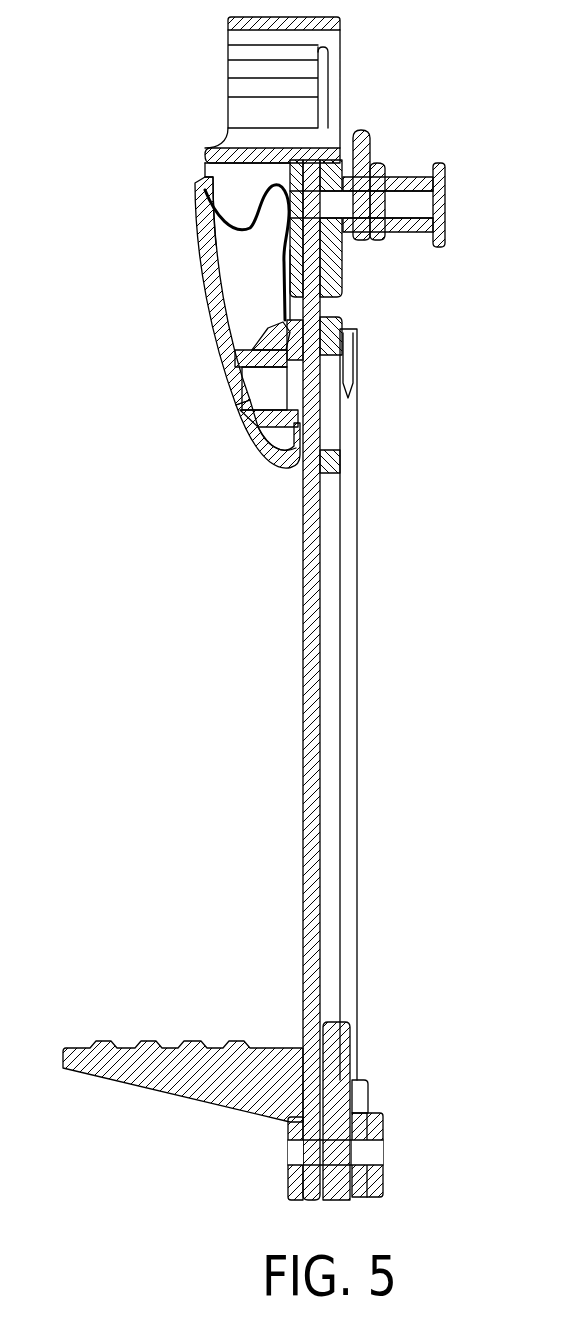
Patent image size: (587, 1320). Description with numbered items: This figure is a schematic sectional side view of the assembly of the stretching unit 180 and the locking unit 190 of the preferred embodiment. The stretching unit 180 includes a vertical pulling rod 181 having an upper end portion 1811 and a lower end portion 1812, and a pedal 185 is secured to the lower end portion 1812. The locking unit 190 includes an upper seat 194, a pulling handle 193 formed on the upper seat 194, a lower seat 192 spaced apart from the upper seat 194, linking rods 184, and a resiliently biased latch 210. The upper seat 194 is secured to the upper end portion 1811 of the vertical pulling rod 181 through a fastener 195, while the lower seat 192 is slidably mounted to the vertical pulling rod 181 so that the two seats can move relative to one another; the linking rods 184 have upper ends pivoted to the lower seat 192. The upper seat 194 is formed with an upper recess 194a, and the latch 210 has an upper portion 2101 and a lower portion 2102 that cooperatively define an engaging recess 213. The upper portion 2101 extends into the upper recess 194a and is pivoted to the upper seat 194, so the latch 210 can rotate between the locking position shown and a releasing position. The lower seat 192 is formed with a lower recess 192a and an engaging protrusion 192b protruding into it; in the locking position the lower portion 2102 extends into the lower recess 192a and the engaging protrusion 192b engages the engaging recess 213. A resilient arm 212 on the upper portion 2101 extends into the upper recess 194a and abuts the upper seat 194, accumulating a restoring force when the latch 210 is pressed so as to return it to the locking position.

The stretching unit 180 is at (296, 636).
The vertical pulling rod 181 is at (311, 750).
The upper end portion 1811 is at (305, 270).
The lower end portion 1812 is at (305, 1030).
The linking rods 184 is at (349, 750).
The pedal 185 is at (171, 1048).
The locking unit 190 is at (188, 148).
The lower seat 192 is at (249, 468).
The lower recess 192a is at (238, 401).
The engaging protrusion 192b is at (280, 362).
The pulling handle 193 is at (242, 47).
The upper seat 194 is at (334, 147).
The upper recess 194a is at (240, 193).
The fastener 195 is at (400, 178).
The latch 210 is at (202, 305).
The upper portion 2101 is at (212, 223).
The lower portion 2102 is at (270, 398).
The resilient arm 212 is at (262, 213).
The engaging recess 213 is at (270, 348).